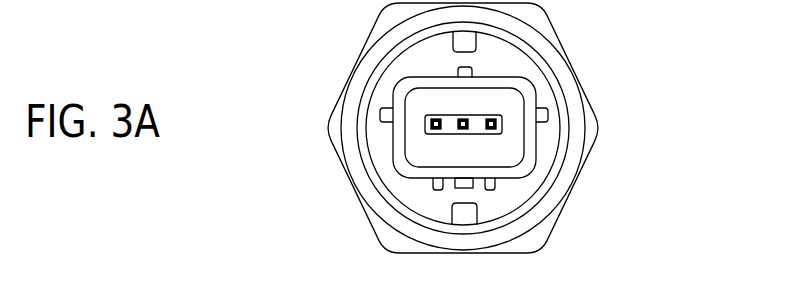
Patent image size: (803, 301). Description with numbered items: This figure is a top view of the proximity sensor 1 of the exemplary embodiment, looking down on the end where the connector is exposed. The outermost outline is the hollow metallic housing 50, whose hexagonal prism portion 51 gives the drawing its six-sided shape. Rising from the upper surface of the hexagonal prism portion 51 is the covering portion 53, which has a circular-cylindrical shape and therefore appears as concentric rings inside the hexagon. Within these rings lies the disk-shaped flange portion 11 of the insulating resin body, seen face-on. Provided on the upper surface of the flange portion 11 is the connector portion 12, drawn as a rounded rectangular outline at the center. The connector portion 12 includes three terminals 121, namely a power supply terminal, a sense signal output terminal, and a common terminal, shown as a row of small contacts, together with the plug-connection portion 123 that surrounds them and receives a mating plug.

The proximity sensor 1 is at (660, 67).
The flange portion 11 is at (387, 172).
The connector portion 12 is at (243, 22).
The terminals 121 is at (488, 119).
The plug-connection portion 123 is at (395, 142).
The housing 50 is at (603, 129).
The hexagonal prism portion 51 is at (537, 247).
The covering portion 53 is at (558, 60).